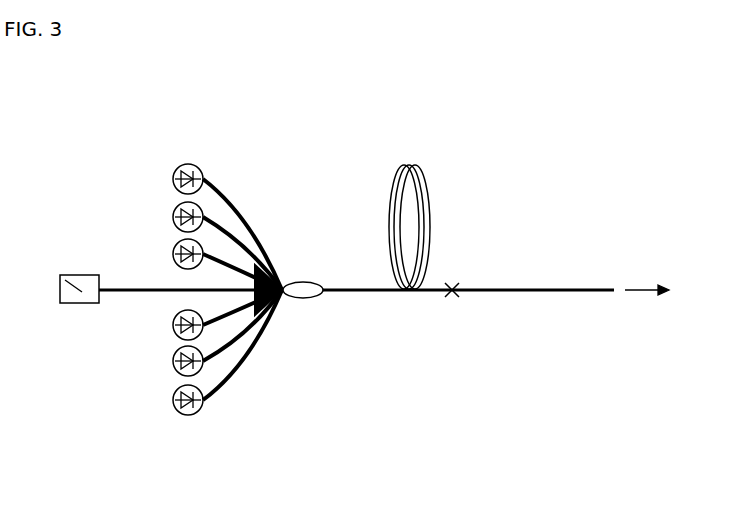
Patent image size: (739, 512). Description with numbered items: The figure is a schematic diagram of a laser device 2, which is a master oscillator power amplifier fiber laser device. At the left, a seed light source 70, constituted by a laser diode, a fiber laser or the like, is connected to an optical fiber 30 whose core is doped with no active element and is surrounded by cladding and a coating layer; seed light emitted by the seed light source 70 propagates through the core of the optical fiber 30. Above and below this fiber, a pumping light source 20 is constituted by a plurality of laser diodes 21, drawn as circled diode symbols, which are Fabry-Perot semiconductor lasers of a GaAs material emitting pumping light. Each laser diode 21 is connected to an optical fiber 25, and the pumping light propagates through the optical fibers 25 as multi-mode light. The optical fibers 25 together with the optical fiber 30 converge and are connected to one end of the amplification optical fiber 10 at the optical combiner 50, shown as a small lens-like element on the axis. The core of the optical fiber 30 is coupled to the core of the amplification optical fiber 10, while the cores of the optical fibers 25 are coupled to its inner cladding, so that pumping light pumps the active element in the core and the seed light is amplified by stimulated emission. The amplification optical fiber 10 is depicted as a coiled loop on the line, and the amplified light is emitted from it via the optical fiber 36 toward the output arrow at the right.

The laser device 2 is at (594, 148).
The amplification optical fiber 10 is at (430, 290).
The pumping light source 20 is at (178, 147).
The laser diode 21 is at (173, 182).
The optical fiber 25 is at (226, 263).
The optical fiber 30 is at (116, 290).
The optical fiber 36 is at (519, 290).
The optical combiner 50 is at (308, 294).
The seed light source 70 is at (80, 292).